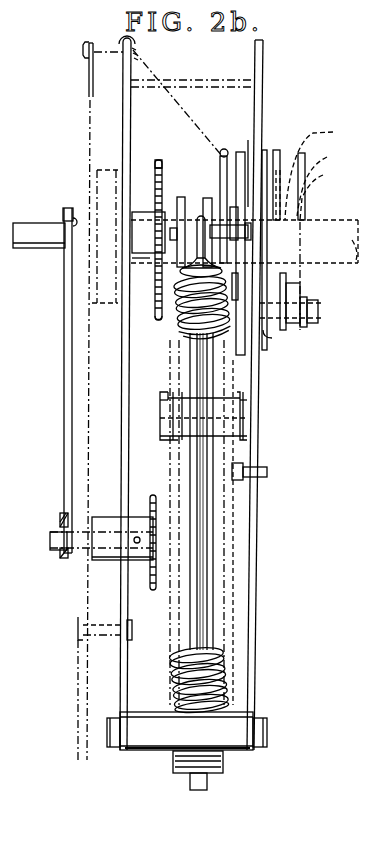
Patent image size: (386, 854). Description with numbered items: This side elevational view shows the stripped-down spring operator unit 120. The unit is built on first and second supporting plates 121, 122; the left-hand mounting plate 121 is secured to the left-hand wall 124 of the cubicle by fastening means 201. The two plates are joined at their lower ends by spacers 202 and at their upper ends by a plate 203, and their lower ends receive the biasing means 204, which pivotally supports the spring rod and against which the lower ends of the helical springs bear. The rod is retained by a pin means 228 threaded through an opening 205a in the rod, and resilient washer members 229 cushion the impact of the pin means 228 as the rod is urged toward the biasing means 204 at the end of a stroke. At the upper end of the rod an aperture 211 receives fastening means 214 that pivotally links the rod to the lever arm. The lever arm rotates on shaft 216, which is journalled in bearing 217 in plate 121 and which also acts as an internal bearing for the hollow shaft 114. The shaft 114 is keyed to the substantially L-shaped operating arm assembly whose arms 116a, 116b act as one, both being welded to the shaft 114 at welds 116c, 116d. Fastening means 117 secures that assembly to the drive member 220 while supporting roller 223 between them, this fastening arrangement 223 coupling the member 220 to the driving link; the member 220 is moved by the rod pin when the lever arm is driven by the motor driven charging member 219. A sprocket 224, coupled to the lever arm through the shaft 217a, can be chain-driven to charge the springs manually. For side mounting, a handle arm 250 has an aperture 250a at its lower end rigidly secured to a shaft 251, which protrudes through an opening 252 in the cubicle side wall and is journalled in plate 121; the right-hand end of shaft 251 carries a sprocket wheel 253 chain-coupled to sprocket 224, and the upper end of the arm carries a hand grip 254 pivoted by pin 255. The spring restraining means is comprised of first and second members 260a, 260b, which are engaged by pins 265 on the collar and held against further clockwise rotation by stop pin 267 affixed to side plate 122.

The shaft 114 is at (336, 215).
The arm 116a is at (332, 248).
The arm 116b is at (278, 276).
The weld 116c is at (324, 172).
The weld 116d is at (333, 183).
The fastening means 117 is at (320, 317).
The spring operator unit 120 is at (267, 515).
The first supporting plate 121 is at (121, 474).
The second supporting plate 122 is at (257, 383).
The left-hand wall 124 is at (86, 448).
The fastening means 201 is at (76, 628).
The spacers 202 is at (220, 743).
The plate 203 is at (198, 78).
The biasing means 204 is at (115, 752).
The opening 205a is at (181, 773).
The aperture 211 is at (235, 232).
The fastening means 214 is at (176, 222).
The shaft 216 is at (232, 207).
The bearing 217 is at (130, 202).
The shaft 217a is at (156, 317).
The motor driven charging member 219 is at (220, 153).
The drive member 220 is at (250, 138).
The fastening arrangement 223 is at (267, 336).
The sprocket 224 is at (157, 160).
The pin means 228 is at (210, 772).
The resilient washer members 229 is at (223, 757).
The handle arm 250 is at (64, 397).
The aperture 250a is at (64, 522).
The shaft 251 is at (50, 541).
The opening 252 is at (83, 553).
The sprocket wheel 253 is at (152, 594).
The hand grip 254 is at (32, 248).
The pin 255 is at (63, 212).
The first member 260a is at (158, 460).
The second member 260b is at (247, 422).
The pin 265 is at (180, 398).
The stop pin 267 is at (238, 463).